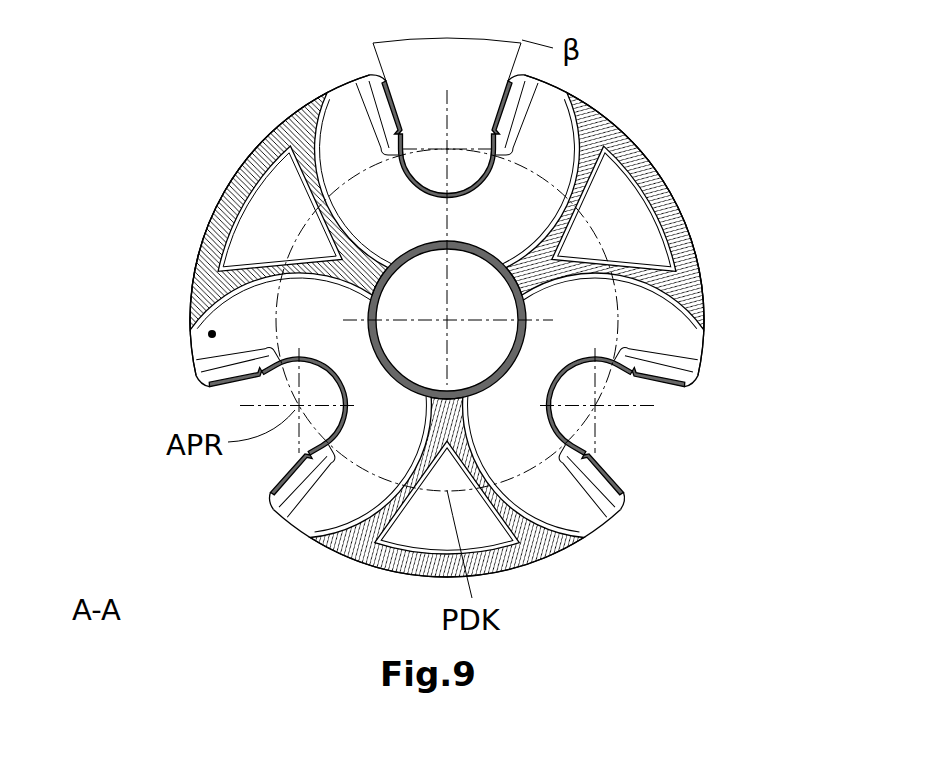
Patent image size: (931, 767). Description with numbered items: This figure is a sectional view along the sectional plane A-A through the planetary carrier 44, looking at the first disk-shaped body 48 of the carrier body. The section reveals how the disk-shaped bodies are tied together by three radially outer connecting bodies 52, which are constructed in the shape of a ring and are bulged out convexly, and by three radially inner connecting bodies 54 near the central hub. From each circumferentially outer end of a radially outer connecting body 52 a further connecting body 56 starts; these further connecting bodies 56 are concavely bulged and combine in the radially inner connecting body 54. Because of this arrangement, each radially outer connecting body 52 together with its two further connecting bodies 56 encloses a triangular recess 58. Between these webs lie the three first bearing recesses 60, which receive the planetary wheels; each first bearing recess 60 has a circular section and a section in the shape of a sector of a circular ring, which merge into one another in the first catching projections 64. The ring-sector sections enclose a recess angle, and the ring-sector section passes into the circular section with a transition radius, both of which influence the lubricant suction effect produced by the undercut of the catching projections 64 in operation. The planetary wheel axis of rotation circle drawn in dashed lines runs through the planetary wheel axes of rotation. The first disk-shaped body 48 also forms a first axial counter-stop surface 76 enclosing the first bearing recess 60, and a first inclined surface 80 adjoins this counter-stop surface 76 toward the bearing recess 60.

The planetary carrier 44 is at (448, 364).
The first disk-shaped body 48 is at (209, 335).
The radially outer connecting body 52 is at (637, 187).
The radially inner connecting body 54 is at (518, 255).
The further connecting body 56 is at (568, 187).
The recess 58 is at (641, 237).
The first bearing recess 60 is at (644, 431).
The first catching projection 64 is at (631, 441).
The first axial counter-stop surface 76 is at (688, 344).
The first inclined surface 80 is at (615, 497).